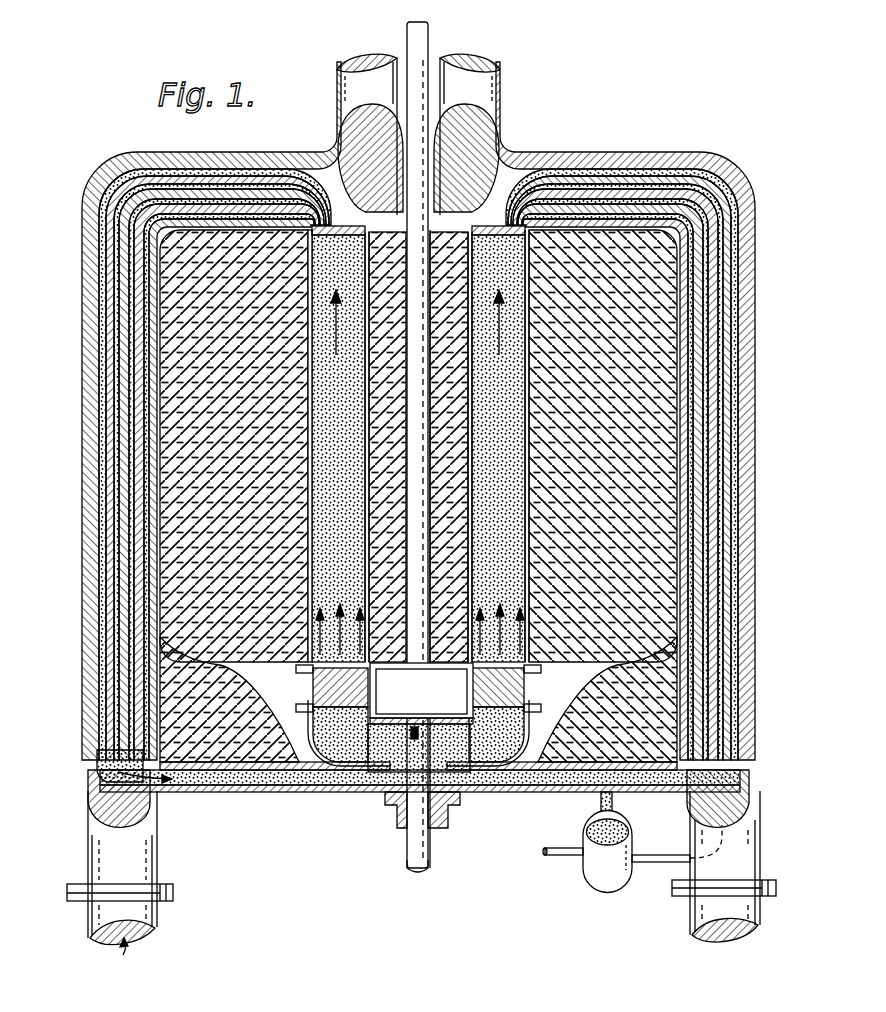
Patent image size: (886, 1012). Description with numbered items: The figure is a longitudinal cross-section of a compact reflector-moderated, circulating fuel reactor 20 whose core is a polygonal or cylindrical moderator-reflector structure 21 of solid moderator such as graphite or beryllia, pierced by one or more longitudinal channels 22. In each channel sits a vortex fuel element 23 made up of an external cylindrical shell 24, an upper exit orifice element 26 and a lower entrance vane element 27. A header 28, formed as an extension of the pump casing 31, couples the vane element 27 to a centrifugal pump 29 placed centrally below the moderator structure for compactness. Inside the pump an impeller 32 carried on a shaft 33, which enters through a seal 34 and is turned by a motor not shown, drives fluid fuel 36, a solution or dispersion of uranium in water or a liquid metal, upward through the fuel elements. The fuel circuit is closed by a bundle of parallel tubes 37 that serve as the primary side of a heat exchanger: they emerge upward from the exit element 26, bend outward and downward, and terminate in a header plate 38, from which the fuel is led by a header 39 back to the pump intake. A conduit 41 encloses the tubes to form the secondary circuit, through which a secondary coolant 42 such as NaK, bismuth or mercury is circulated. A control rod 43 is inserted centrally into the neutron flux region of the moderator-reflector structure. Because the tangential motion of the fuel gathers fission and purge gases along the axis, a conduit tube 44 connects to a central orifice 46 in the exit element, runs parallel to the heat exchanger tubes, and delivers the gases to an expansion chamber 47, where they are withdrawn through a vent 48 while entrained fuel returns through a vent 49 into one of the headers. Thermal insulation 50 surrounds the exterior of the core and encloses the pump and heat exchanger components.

The reflector-moderated circulating fuel reactor 20 is at (526, 142).
The moderator-reflector structure 21 is at (240, 335).
The longitudinal channel 22 is at (307, 618).
The vortex fuel element 23 is at (509, 448).
The external cylindrical shell 24 is at (311, 400).
The upper exit orifice element 26 is at (356, 228).
The lower entrance vane element 27 is at (312, 688).
The header 28 is at (308, 740).
The centrifugal pump 29 is at (546, 732).
The pump casing 31 is at (442, 716).
The impeller 32 is at (393, 722).
The shaft 33 is at (433, 840).
The seal 34 is at (404, 826).
The fluid fuel 36 is at (353, 744).
The parallel tubes 37 is at (118, 180).
The header plate 38 is at (108, 762).
The header 39 is at (262, 793).
The conduit 41 is at (343, 62).
The secondary coolant 42 is at (120, 957).
The control rod 43 is at (426, 24).
The conduit tube 44 is at (752, 836).
The central orifice 46 is at (337, 240).
The expansion chamber 47 is at (598, 886).
The vent 48 is at (569, 848).
The vent 49 is at (614, 796).
The thermal insulation 50 is at (206, 736).